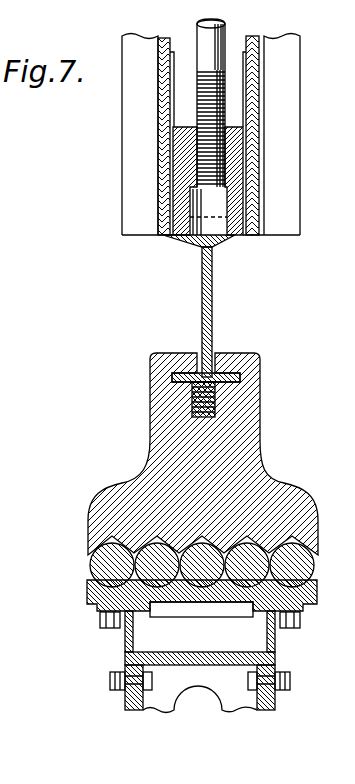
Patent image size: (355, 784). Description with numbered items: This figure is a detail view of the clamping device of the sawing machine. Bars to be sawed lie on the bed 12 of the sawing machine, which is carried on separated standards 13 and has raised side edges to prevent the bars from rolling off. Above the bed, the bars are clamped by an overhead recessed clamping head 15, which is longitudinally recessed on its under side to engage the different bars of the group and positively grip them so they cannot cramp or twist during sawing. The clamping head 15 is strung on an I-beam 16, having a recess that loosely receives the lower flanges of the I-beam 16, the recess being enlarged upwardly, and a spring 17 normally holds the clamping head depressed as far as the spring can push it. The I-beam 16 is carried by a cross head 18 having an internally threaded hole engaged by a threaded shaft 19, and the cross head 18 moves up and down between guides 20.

The bed of the sawing machine 12 is at (218, 601).
The standards 13 is at (236, 737).
The clamping head 15 is at (203, 454).
The I-beam 16 is at (212, 314).
The spring 17 is at (215, 400).
The cross head 18 is at (236, 155).
The threaded shaft 19 is at (224, 36).
The guides 20 is at (158, 140).